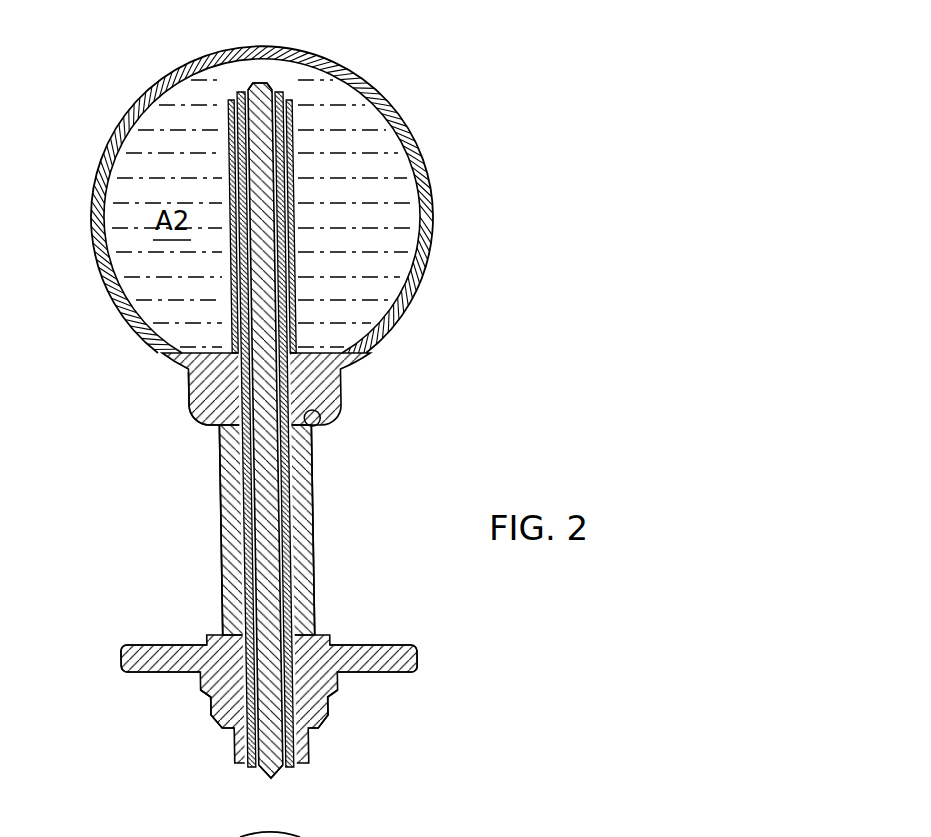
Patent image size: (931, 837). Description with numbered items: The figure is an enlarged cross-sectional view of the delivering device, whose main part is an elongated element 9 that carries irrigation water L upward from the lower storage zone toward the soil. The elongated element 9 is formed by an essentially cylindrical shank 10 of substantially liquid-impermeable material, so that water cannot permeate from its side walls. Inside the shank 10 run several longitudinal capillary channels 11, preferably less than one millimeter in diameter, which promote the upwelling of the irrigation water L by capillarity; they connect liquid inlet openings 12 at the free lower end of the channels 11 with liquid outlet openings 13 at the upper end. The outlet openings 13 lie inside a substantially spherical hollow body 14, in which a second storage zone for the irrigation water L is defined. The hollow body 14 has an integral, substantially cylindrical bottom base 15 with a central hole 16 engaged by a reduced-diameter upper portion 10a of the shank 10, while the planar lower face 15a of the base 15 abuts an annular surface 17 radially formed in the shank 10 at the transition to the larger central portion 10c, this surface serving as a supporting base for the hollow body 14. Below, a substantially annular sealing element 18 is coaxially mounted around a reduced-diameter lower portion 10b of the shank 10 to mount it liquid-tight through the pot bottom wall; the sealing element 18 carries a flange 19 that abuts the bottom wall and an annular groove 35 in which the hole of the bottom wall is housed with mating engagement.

The elongated element 9 is at (400, 430).
The shank 10 is at (168, 530).
The upper portion of the shank 10a is at (293, 222).
The lower portion of the shank 10b is at (307, 745).
The central portion of the shank 10c is at (314, 584).
The longitudinal channels 11 is at (295, 198).
The liquid inlet openings 12 is at (262, 774).
The liquid outlet openings 13 is at (292, 100).
The hollow body 14 is at (428, 190).
The bottom base 15 is at (322, 390).
The lower face of the base 15a is at (220, 447).
The central hole 16 is at (190, 378).
The annular surface 17 is at (320, 430).
The sealing element 18 is at (415, 645).
The flange 19 is at (132, 667).
The annular groove 35 is at (330, 680).
The irrigation water L is at (345, 125).